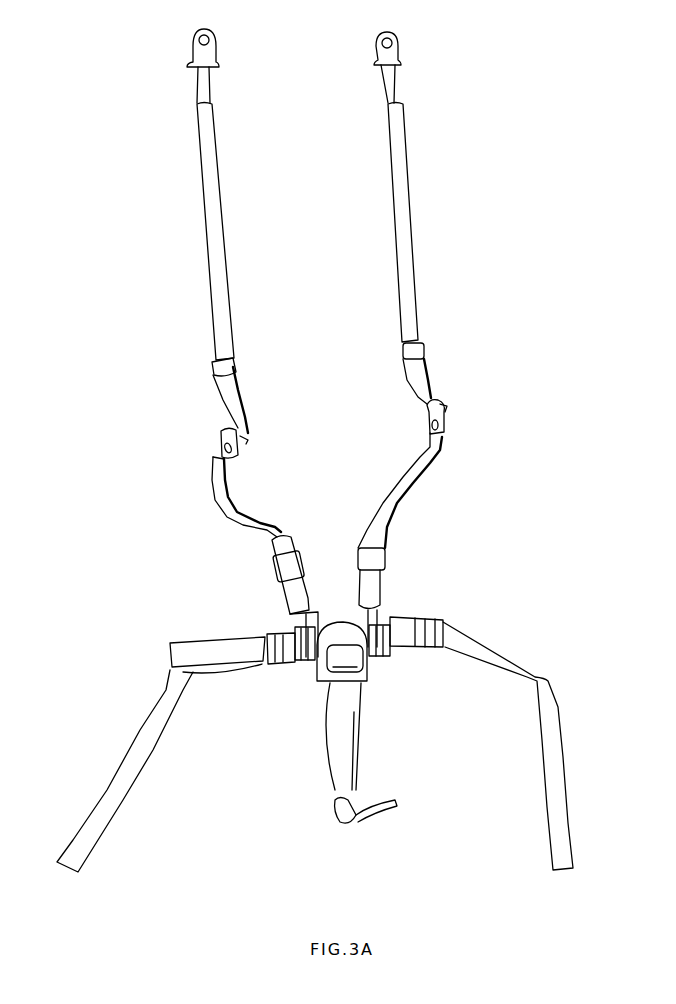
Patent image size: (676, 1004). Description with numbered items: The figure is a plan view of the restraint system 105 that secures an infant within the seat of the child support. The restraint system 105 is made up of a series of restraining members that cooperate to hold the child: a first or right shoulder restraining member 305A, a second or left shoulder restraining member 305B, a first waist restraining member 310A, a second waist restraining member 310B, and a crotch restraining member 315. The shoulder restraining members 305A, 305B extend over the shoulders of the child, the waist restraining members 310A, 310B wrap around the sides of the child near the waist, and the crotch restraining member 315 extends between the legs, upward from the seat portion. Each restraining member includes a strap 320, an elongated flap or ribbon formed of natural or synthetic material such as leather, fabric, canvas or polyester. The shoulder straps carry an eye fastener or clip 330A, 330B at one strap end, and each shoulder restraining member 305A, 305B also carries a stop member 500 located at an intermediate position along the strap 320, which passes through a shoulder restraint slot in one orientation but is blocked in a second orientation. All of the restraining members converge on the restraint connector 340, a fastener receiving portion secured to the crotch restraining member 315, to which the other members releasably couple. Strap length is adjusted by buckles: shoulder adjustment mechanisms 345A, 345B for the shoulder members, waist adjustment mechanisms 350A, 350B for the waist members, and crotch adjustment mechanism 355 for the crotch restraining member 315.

The restraint system 105 is at (487, 142).
The eye fastener or clip 330A is at (386, 56).
The eye fastener or clip 330B is at (196, 48).
The first or right shoulder restraining member 305A is at (426, 367).
The second or left shoulder restraining member 305B is at (218, 394).
The stop member 500 is at (217, 439).
The strap 320 is at (207, 497).
The shoulder adjustment mechanism 345A is at (386, 560).
The shoulder adjustment mechanism 345B is at (272, 560).
The waist adjustment mechanism 350A is at (440, 618).
The waist adjustment mechanism 350B is at (265, 640).
The restraint connector 340 is at (386, 653).
The first waist restraining member 310A is at (570, 838).
The second waist restraining member 310B is at (70, 840).
The crotch restraining member 315 is at (352, 747).
The crotch adjustment mechanism 355 is at (335, 803).